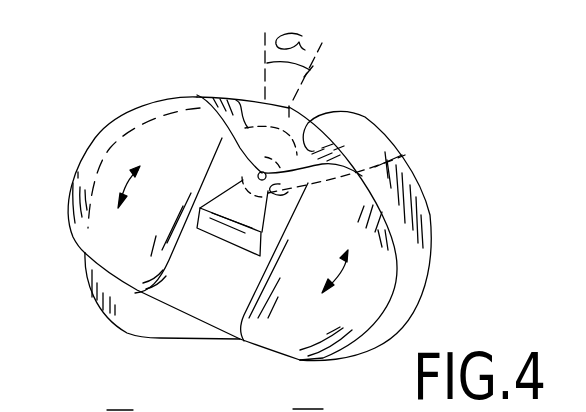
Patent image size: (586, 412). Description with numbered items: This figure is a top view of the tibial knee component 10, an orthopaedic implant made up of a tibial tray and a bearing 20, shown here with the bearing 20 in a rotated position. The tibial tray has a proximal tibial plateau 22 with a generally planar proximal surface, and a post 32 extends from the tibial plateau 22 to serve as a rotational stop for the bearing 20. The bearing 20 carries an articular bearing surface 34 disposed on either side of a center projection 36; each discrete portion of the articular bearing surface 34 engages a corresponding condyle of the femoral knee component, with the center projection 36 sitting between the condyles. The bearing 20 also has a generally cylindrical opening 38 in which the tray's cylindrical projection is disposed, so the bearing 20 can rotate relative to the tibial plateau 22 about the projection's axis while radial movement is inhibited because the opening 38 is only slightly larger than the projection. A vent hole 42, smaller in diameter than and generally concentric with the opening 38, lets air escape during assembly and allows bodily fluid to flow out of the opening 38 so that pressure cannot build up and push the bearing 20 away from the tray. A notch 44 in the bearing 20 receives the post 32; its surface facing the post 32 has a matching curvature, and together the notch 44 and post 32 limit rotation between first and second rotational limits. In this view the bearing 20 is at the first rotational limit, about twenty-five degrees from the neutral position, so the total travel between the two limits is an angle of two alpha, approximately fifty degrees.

The tibial knee component 10 is at (466, 88).
The bearing 20 is at (137, 104).
The tibial plateau 22 is at (408, 271).
The post 32 is at (289, 108).
The articular bearing surface 34 is at (180, 125).
The center projection 36 is at (234, 237).
The opening 38 is at (410, 152).
The vent hole 42 is at (262, 172).
The notch 44 is at (338, 113).